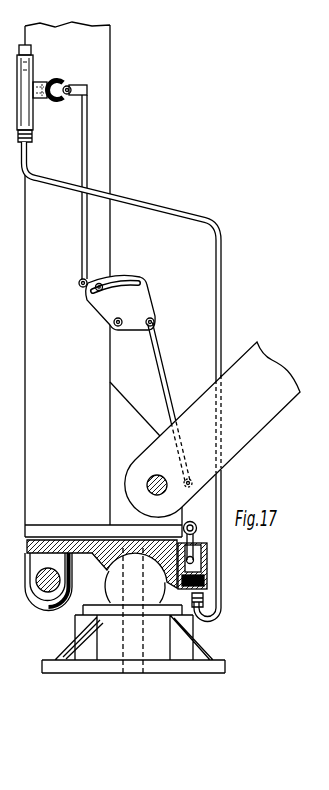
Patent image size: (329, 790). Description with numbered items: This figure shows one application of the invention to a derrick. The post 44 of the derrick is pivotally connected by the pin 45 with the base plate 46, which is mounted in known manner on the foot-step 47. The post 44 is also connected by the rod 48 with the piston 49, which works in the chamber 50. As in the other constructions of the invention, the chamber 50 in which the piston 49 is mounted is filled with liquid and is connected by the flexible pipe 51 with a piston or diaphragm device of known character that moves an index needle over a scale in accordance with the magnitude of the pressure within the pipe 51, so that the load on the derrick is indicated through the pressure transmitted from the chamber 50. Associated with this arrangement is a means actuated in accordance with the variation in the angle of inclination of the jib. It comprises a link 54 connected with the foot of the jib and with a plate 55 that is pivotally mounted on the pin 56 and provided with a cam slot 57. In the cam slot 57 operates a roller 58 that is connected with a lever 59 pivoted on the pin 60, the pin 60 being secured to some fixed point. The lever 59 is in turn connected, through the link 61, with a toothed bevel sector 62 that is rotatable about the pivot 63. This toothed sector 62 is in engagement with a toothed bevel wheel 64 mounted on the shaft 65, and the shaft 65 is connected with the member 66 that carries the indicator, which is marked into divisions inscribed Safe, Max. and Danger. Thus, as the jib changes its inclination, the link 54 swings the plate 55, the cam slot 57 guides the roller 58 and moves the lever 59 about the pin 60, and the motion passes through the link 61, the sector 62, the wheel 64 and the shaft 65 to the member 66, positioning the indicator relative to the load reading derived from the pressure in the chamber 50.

The post 44 is at (103, 148).
The pin 45 is at (47, 597).
The base plate 46 is at (107, 547).
The foot-step 47 is at (85, 636).
The rod 48 is at (200, 540).
The piston 49 is at (203, 560).
The chamber 50 is at (200, 578).
The flexible pipe 51 is at (222, 281).
The link 54 is at (160, 353).
The plate 55 is at (135, 303).
The pin 56 is at (110, 340).
The cam slot 57 is at (140, 278).
The roller 58 is at (127, 282).
The lever 59 is at (81, 280).
The pin 60 is at (99, 283).
The link 61 is at (82, 226).
The toothed bevel sector 62 is at (35, 120).
The pivot 63 is at (71, 87).
The toothed bevel wheel 64 is at (66, 85).
The shaft 65 is at (18, 82).
The member 66 is at (68, 87).